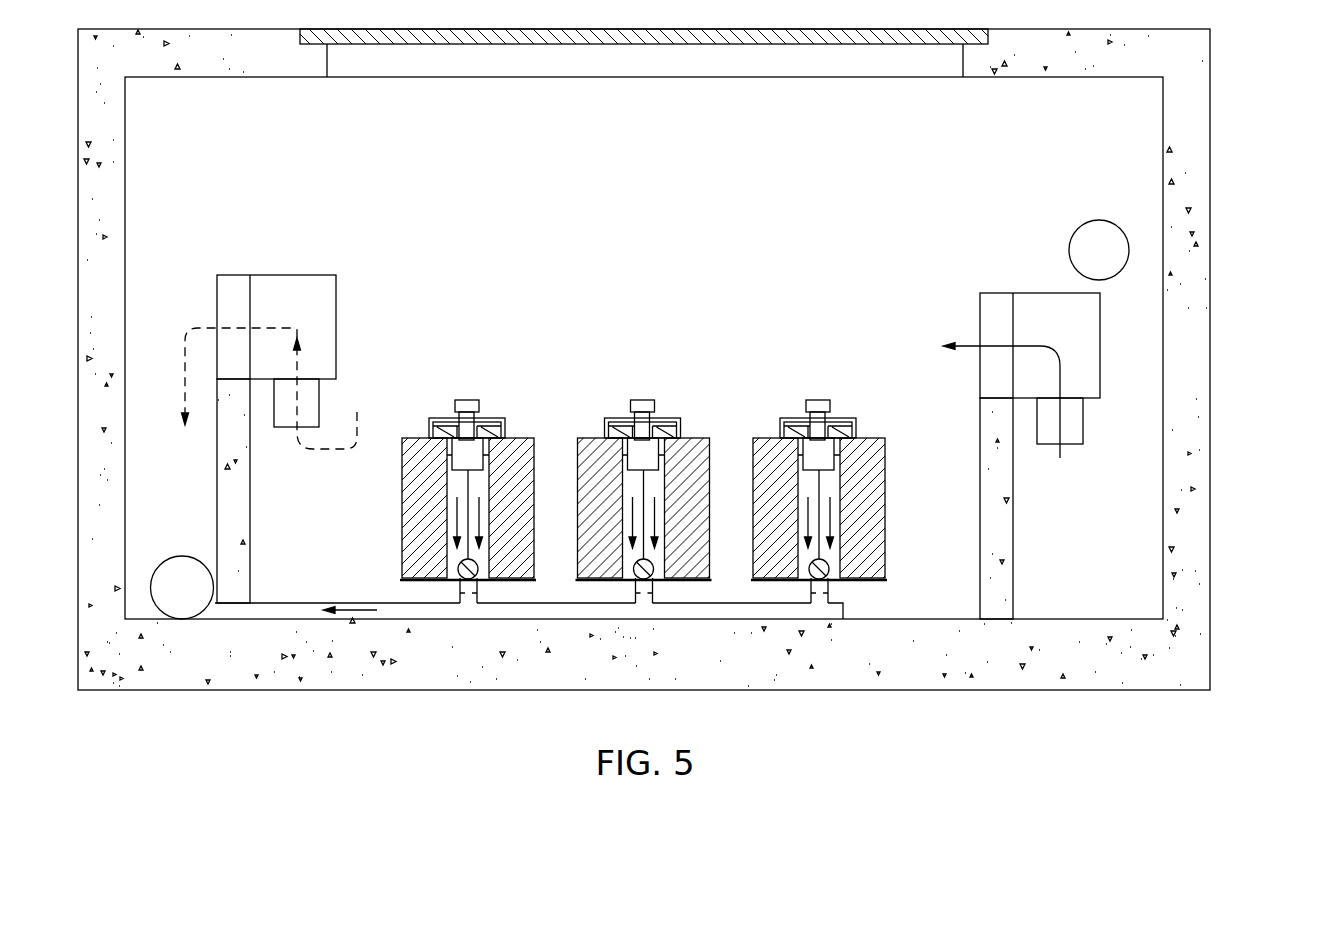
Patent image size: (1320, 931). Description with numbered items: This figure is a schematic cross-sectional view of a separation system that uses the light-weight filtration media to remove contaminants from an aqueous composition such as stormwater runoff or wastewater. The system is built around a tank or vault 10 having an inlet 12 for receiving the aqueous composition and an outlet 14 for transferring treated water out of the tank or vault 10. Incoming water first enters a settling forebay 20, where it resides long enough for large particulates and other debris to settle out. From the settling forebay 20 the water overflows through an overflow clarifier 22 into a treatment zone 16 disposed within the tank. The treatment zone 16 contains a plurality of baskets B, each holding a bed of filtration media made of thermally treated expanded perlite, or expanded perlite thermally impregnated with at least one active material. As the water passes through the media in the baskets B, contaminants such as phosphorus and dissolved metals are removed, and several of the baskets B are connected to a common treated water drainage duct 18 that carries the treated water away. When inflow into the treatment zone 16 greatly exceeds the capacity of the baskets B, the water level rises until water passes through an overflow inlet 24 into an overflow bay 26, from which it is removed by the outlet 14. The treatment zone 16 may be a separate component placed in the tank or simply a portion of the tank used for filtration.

The tank or vault 10 is at (1227, 205).
The inlet 12 is at (1100, 220).
The outlet 14 is at (182, 556).
The treatment zone 16 is at (677, 329).
The common treated water drainage duct 18 is at (353, 603).
The settling forebay 20 is at (1122, 537).
The overflow clarifier 22 is at (1077, 373).
The overflow inlet 24 is at (319, 401).
The overflow bay 26 is at (164, 348).
The basket B is at (521, 438).